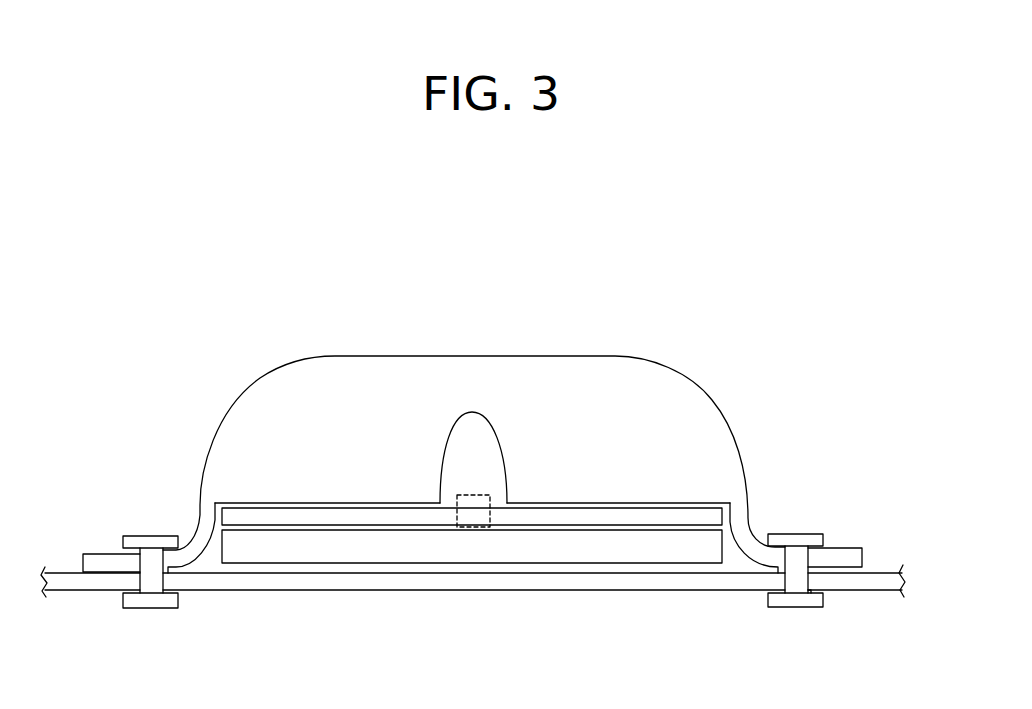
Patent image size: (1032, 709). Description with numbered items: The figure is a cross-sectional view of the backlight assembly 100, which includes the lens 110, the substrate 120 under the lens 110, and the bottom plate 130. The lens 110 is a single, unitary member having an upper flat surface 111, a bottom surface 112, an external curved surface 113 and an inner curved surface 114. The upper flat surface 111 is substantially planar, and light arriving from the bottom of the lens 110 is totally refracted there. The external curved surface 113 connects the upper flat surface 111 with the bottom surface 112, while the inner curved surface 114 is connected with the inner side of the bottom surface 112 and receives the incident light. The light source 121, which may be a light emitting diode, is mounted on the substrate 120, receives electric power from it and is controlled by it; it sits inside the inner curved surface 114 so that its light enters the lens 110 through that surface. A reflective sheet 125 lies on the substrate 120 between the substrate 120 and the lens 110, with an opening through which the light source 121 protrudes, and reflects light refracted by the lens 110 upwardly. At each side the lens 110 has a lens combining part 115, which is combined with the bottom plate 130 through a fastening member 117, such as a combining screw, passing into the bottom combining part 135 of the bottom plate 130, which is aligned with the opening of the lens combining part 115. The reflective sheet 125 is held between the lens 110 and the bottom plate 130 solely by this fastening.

The backlight assembly 100 is at (461, 229).
The lens 110 is at (470, 287).
The upper flat surface 111 is at (577, 355).
The bottom surface 112 is at (677, 500).
The external curved surface 113 is at (721, 407).
The inner curved surface 114 is at (500, 425).
The lens combining part 115 is at (838, 547).
The fastening member 117 is at (802, 600).
The substrate 120 is at (650, 548).
The light source 121 is at (473, 500).
The reflective sheet 125 is at (548, 513).
The bottom plate 130 is at (883, 573).
The bottom combining part 135 is at (822, 598).